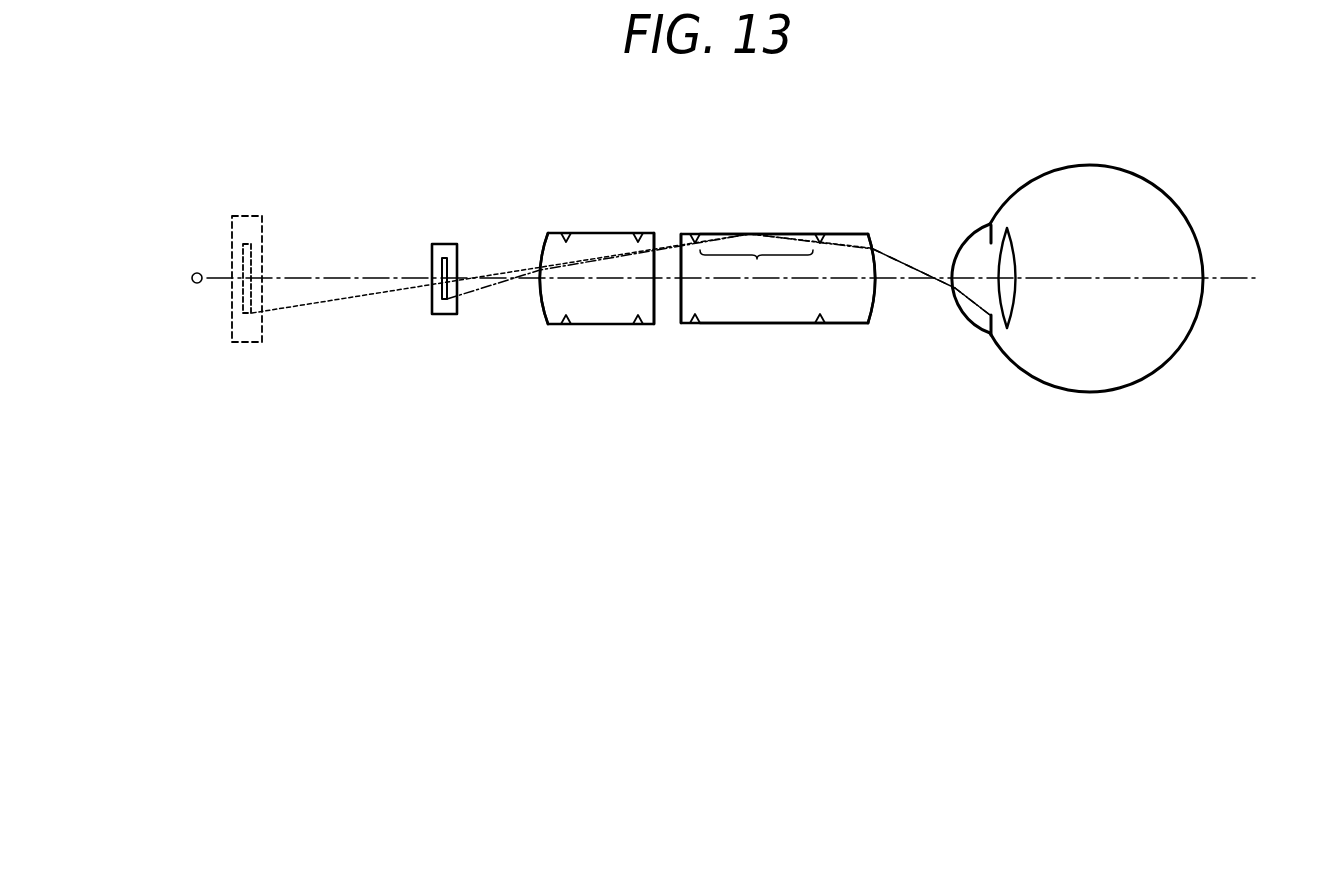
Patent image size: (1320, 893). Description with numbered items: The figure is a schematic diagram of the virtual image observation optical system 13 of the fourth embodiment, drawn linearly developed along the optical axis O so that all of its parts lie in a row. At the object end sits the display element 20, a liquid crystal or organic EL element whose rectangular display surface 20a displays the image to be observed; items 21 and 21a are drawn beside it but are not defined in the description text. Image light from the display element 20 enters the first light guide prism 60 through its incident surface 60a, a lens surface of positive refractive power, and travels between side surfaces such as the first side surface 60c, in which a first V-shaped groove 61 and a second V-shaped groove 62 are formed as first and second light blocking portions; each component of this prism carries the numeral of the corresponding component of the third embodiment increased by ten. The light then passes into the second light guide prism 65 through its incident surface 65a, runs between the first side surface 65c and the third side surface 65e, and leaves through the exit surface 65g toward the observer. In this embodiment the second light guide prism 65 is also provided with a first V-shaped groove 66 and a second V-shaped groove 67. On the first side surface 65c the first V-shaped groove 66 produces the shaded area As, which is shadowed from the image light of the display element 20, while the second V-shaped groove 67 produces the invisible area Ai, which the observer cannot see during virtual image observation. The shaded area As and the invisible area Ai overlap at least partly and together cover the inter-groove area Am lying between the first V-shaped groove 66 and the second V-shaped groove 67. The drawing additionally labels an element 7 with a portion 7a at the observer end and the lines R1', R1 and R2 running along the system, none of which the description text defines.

The virtual image observation optical system 13 is at (560, 450).
The optical axis O is at (723, 278).
The light source unit 21 is at (232, 230).
The light emitting portion 21a is at (243, 297).
The display element 20 is at (432, 250).
The display surface 20a is at (442, 293).
The first light guide prism 60 is at (597, 315).
The incident surface 60a is at (540, 303).
The first side surface 60c is at (657, 318).
The first V-shaped groove 61 is at (565, 235).
The second V-shaped groove 62 is at (620, 233).
The second light guide prism 65 is at (760, 325).
The incident surface 65a is at (681, 235).
The first side surface 65c is at (757, 234).
The third side surface 65e is at (792, 325).
The exit surface 65g is at (872, 240).
The first V-shaped groove 66 is at (695, 232).
The second V-shaped groove 67 is at (820, 232).
The eye 7 is at (1147, 203).
The pupil / cornea of eye 7a is at (974, 245).
The light ray from light source R1' is at (561, 312).
The light ray through aperture R1 is at (710, 311).
The light ray entering eye R2 is at (936, 283).
The shaded area As is at (732, 232).
The invisible area Ai is at (783, 232).
The inter-groove area Am is at (756, 264).